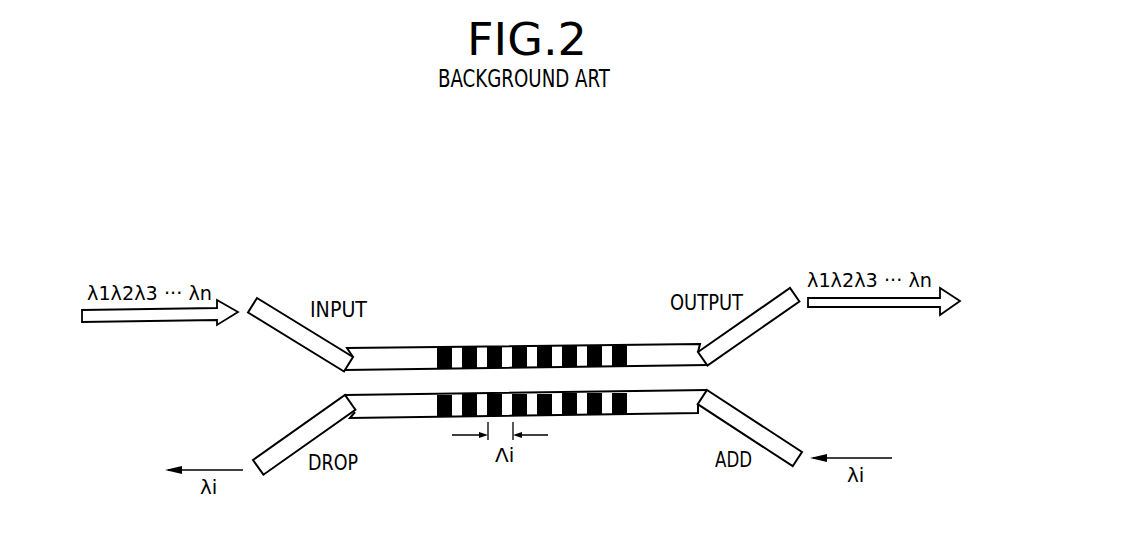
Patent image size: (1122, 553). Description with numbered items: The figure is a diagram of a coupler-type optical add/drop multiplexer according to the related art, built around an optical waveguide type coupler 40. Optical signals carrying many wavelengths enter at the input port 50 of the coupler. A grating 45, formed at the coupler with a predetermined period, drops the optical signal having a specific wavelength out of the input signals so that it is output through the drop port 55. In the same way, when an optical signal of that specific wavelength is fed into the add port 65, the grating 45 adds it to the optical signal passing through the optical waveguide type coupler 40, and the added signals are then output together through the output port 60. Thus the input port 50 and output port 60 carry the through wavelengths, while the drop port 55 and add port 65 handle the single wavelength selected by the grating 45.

The optical waveguide type coupler 40 is at (403, 347).
The grating 45 is at (493, 343).
The input port 50 is at (281, 316).
The drop port 55 is at (282, 453).
The output port 60 is at (768, 310).
The add port 65 is at (775, 445).